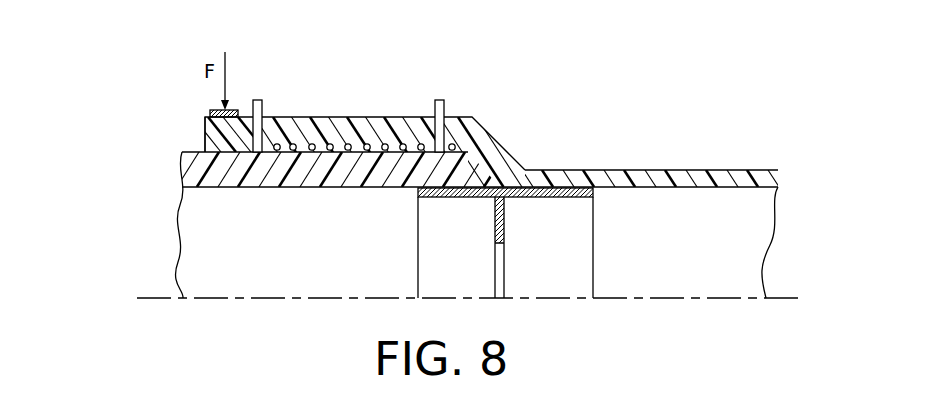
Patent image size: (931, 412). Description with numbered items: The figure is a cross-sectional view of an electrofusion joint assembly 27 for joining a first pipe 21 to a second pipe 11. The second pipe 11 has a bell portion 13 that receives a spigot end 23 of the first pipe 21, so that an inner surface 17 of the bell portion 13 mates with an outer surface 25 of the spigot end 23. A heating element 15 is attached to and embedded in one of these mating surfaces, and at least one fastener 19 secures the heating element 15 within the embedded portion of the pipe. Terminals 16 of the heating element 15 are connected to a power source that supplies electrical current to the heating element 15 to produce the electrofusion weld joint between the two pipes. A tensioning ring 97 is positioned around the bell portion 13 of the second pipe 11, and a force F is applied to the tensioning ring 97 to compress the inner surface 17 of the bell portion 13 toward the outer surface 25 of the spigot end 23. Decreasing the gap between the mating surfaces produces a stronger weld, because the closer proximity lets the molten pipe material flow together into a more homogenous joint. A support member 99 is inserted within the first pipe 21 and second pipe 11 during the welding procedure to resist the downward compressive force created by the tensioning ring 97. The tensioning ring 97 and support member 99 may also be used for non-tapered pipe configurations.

The second pipe 11 is at (630, 159).
The bell portion 13 is at (343, 106).
The heating element 15 is at (390, 144).
The terminals 16 is at (258, 100).
The inner surface 17 is at (232, 158).
The fastener 19 is at (340, 154).
The first pipe 21 is at (186, 138).
The spigot end 23 is at (172, 167).
The outer surface 25 is at (245, 116).
The electrofusion joint assembly 27 is at (526, 104).
The tensioning ring 97 is at (210, 110).
The support member 99 is at (495, 230).